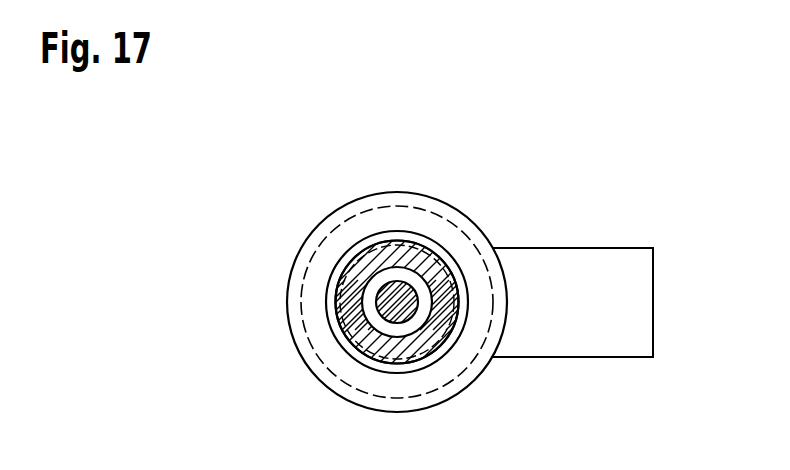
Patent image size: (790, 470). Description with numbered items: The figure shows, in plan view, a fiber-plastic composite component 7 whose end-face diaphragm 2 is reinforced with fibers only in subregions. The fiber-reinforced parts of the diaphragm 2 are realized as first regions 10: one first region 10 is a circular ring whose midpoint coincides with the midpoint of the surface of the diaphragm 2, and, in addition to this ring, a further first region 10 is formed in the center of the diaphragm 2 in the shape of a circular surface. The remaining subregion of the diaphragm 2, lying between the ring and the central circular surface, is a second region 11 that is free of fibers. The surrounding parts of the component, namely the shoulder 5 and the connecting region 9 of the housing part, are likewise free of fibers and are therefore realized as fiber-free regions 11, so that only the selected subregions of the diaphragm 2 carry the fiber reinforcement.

The diaphragm 2 is at (378, 243).
The shoulder 5 is at (408, 218).
The fiber-plastic composite component 7 is at (529, 220).
The connecting region 9 is at (621, 263).
The first region 10 is at (342, 297).
The second region 11 is at (370, 283).